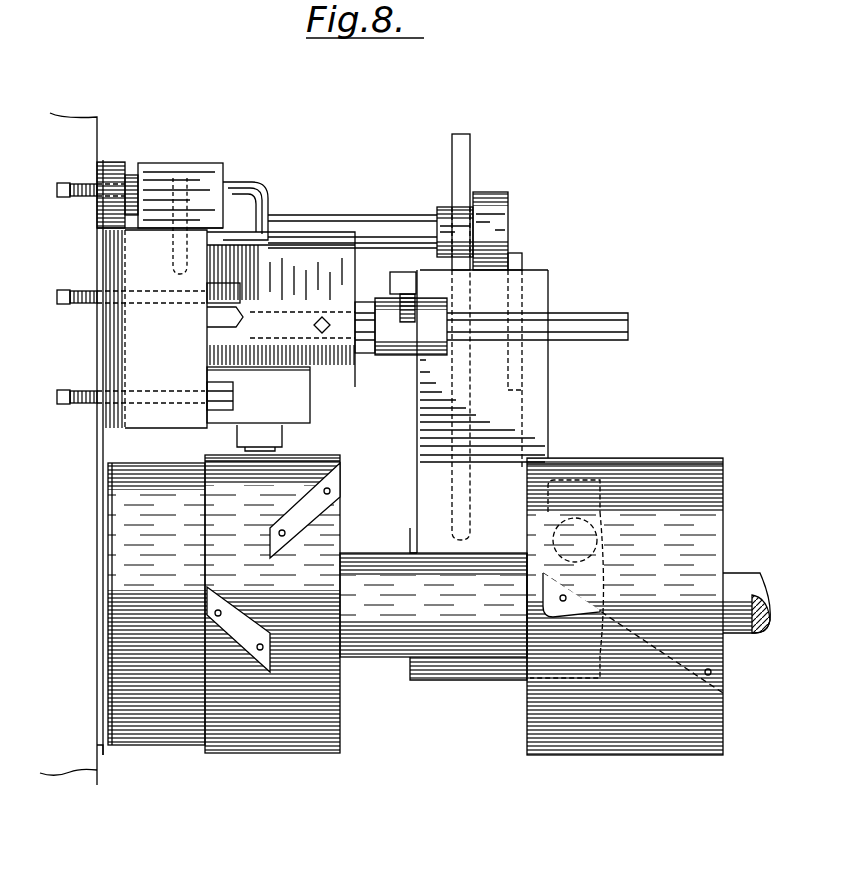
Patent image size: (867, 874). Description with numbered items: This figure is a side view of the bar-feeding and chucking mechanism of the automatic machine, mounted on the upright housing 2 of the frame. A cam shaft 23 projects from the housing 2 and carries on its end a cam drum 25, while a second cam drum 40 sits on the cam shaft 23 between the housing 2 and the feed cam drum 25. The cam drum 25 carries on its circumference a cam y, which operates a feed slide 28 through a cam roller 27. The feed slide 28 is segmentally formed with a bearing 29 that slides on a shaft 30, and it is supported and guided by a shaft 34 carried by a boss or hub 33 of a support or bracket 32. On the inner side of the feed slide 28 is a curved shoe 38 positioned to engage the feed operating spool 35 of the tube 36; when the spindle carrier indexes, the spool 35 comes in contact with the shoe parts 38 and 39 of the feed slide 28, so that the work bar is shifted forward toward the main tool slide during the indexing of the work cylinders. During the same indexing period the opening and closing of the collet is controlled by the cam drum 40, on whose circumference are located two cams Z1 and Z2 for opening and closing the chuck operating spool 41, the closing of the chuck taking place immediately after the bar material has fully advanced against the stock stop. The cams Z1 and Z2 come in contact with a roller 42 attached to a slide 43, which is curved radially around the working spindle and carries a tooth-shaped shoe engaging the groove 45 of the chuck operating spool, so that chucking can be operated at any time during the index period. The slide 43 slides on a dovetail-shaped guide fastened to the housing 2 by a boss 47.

The upright housing 2 is at (97, 770).
The cam shaft 23 is at (750, 573).
The cam drum 25 is at (690, 458).
The cam roller 27 is at (603, 537).
The feed slide 28 is at (553, 398).
The bearing 29 is at (468, 635).
The shaft 30 is at (376, 655).
The support or bracket 32 is at (405, 272).
The boss or hub 33 is at (393, 355).
The shaft 34 is at (210, 318).
The feed operating spool 35 is at (508, 204).
The tube 36 is at (380, 215).
The curved shoe 38 is at (470, 141).
The shoe part 39 is at (524, 270).
The cam drum 40 is at (340, 741).
The chuck operating spool 41 is at (250, 184).
The roller 42 is at (283, 440).
The slide 43 is at (310, 412).
The groove of the chuck operating spool 45 is at (194, 190).
The boss 47 is at (155, 329).
The cam Z1 is at (338, 512).
The cam Z2 is at (255, 622).
The cam y is at (730, 680).